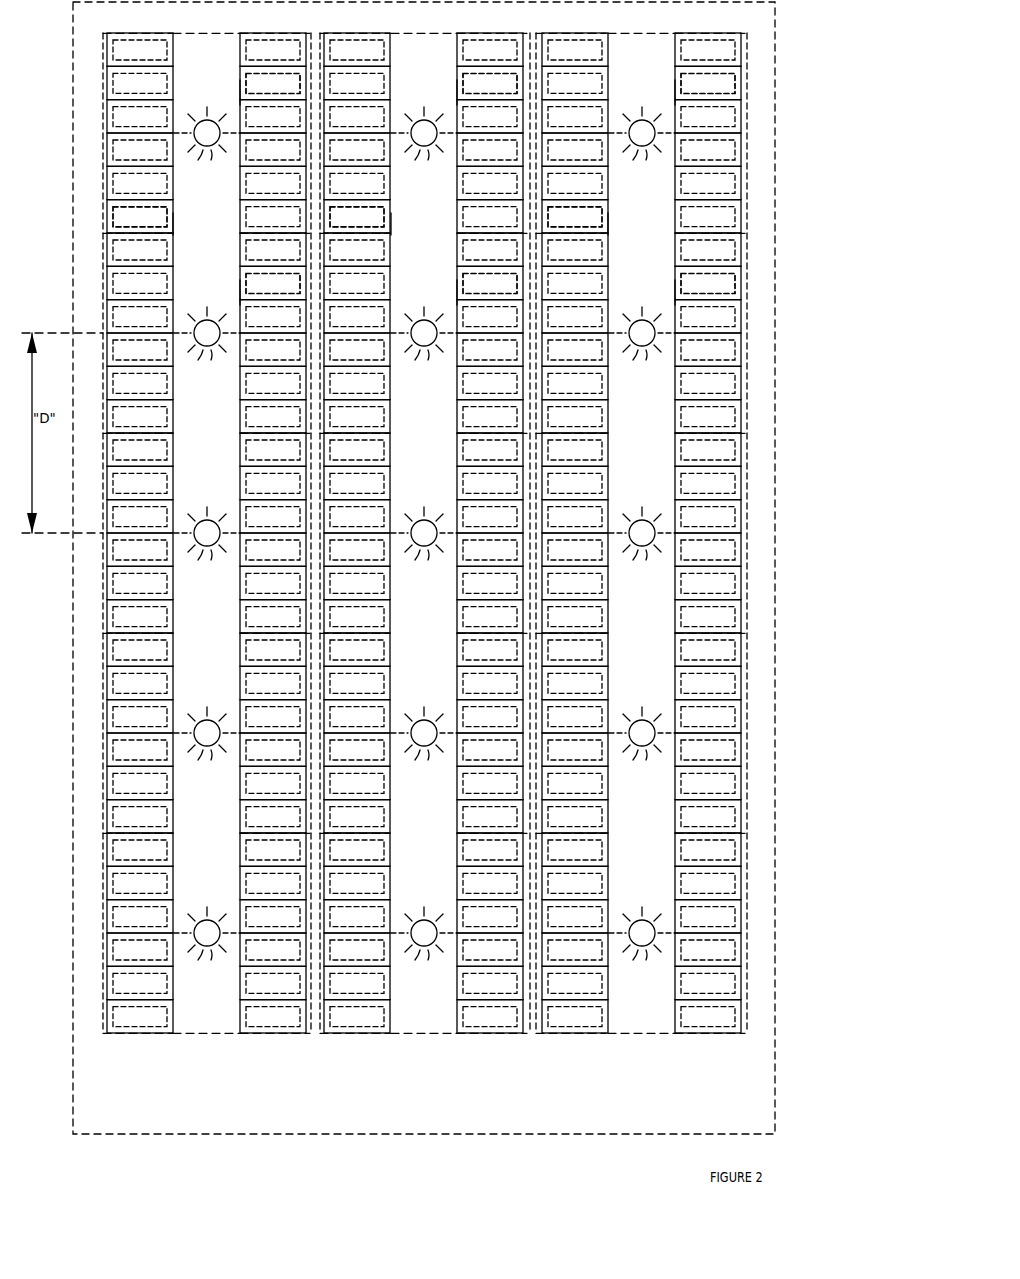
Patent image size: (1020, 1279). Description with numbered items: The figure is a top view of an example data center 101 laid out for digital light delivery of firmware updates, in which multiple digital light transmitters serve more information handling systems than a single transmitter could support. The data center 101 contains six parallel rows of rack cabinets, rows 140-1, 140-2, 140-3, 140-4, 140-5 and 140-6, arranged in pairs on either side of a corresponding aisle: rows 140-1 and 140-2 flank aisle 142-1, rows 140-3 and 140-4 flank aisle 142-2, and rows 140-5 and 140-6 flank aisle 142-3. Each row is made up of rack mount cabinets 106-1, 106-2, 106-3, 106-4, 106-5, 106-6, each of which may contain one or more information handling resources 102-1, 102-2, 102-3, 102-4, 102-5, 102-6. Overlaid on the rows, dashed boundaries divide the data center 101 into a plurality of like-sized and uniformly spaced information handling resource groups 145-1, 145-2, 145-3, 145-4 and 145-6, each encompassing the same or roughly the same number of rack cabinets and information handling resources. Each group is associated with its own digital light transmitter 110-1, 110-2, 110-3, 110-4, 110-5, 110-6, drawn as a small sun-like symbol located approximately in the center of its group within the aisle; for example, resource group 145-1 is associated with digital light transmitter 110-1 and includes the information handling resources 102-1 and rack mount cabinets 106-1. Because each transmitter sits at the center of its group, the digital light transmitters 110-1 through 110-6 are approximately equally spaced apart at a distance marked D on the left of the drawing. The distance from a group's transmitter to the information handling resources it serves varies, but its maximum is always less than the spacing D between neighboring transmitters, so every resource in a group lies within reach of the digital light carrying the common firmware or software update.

The data center 101 is at (73, 95).
The information handling resource 102-1 is at (246, 81).
The information handling resource 102-2 is at (463, 81).
The information handling resource 102-3 is at (681, 81).
The information handling resource 102-4 is at (246, 281).
The information handling resource 102-5 is at (463, 281).
The information handling resource 102-6 is at (681, 281).
The rack mount cabinet 106-1 is at (240, 92).
The rack mount cabinet 106-2 is at (457, 92).
The rack mount cabinet 106-3 is at (675, 92).
The rack mount cabinet 106-4 is at (240, 292).
The rack mount cabinet 106-5 is at (457, 292).
The rack mount cabinet 106-6 is at (675, 292).
The digital light transmitter 110-1 is at (207, 145).
The digital light transmitter 110-2 is at (424, 145).
The digital light transmitter 110-3 is at (642, 145).
The digital light transmitter 110-4 is at (207, 345).
The digital light transmitter 110-5 is at (424, 345).
The digital light transmitter 110-6 is at (642, 345).
The row 140-1 is at (133, 1066).
The row 140-2 is at (258, 1066).
The row 140-3 is at (351, 1066).
The row 140-4 is at (483, 1066).
The row 140-5 is at (560, 1066).
The row 140-6 is at (701, 1066).
The aisle 142-1 is at (202, 1064).
The aisle 142-2 is at (420, 1073).
The aisle 142-3 is at (630, 1065).
The information handling resource group 145-1 is at (194, 34).
The information handling resource group 145-2 is at (412, 34).
The information handling resource group 145-3 is at (629, 34).
The information handling resource group 145-4 is at (103, 265).
The information handling resource group 145-6 is at (748, 317).